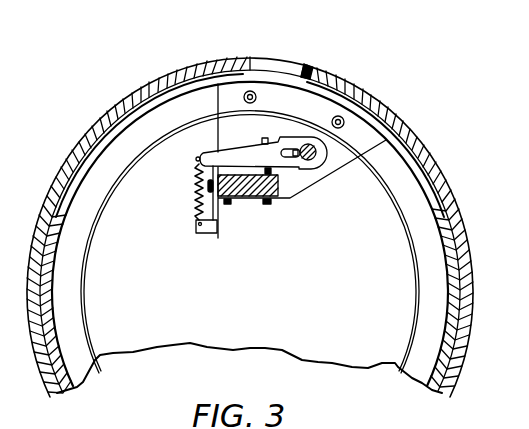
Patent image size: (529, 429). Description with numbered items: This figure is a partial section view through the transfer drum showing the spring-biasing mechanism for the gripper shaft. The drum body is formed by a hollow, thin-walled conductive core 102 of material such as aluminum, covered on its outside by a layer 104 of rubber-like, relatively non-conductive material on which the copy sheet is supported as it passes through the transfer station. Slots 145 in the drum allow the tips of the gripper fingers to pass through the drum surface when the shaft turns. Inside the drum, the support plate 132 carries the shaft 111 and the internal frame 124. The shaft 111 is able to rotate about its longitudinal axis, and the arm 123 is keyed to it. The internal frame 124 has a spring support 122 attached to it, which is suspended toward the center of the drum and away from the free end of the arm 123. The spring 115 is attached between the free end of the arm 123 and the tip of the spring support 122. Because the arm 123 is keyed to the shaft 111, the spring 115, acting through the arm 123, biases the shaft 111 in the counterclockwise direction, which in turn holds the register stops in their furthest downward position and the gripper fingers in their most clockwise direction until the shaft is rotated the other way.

The layer of insulating material 104 is at (183, 63).
The conductive core 102 is at (118, 108).
The slots 145 is at (280, 65).
The support plate 132 is at (315, 107).
The shaft 111 is at (322, 160).
The arm 123 is at (297, 169).
The internal frame 124 is at (257, 197).
The spring support 122 is at (208, 236).
The spring 115 is at (196, 190).